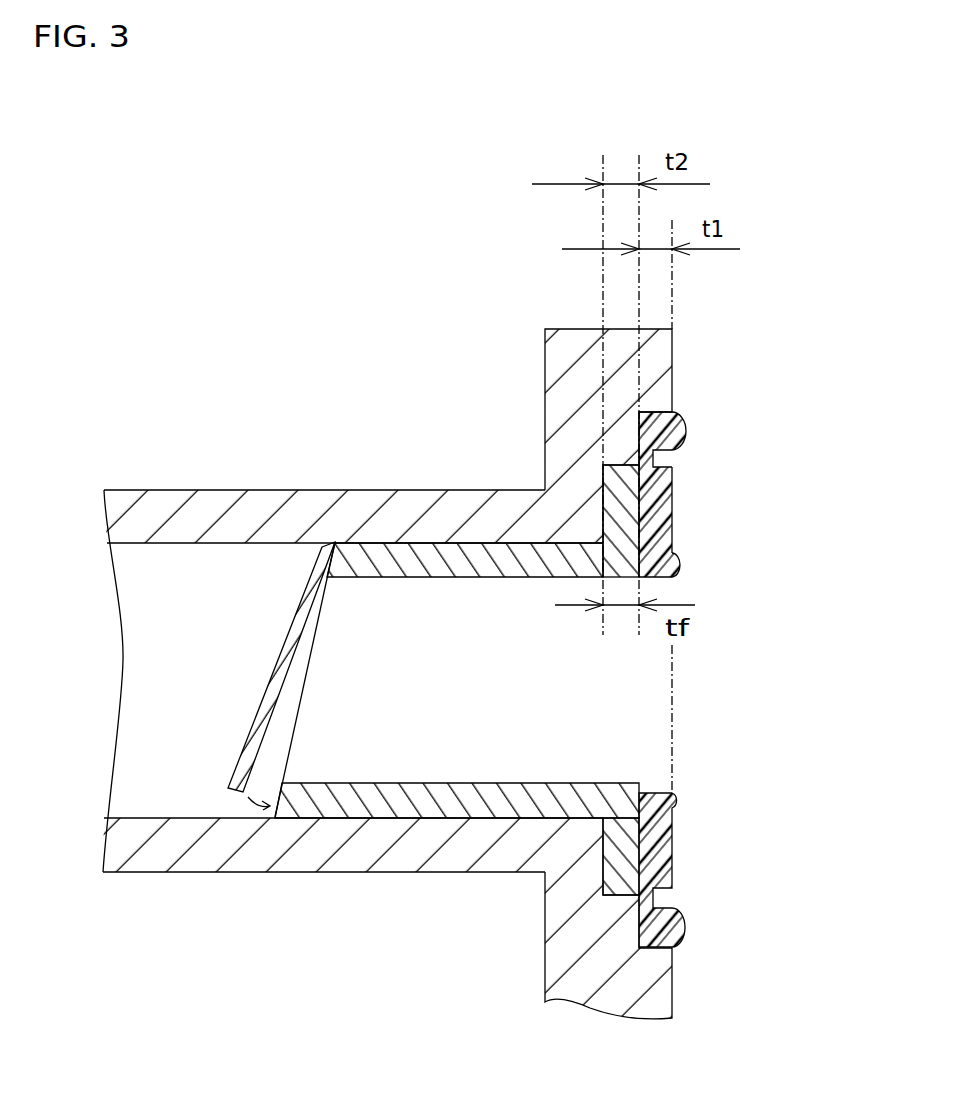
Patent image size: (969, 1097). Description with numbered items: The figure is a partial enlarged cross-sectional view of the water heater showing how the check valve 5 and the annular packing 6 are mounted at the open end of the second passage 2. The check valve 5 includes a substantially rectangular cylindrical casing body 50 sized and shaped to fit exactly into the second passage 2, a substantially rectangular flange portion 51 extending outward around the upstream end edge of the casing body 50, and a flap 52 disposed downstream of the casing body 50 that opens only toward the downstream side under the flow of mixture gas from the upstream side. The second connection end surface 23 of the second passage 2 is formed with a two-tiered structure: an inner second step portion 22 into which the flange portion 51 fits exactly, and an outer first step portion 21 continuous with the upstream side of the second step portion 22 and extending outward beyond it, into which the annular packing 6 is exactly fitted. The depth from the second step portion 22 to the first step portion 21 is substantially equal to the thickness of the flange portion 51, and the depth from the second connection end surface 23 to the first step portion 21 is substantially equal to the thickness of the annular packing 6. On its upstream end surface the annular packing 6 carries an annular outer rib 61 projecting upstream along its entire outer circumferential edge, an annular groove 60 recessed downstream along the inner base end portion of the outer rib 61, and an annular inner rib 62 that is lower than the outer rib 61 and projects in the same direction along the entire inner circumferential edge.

The second passage 2 is at (424, 489).
The first step portion 21 is at (681, 410).
The second connection end surface 23 is at (690, 994).
The second step portion 22 is at (608, 518).
The flange portion 51 is at (620, 857).
The casing body 50 is at (418, 818).
The check valve 5 is at (319, 835).
The flap 52 is at (283, 653).
The annular packing 6 is at (706, 886).
The annular groove 60 is at (672, 455).
The outer rib 61 is at (686, 420).
The inner rib 62 is at (683, 558).